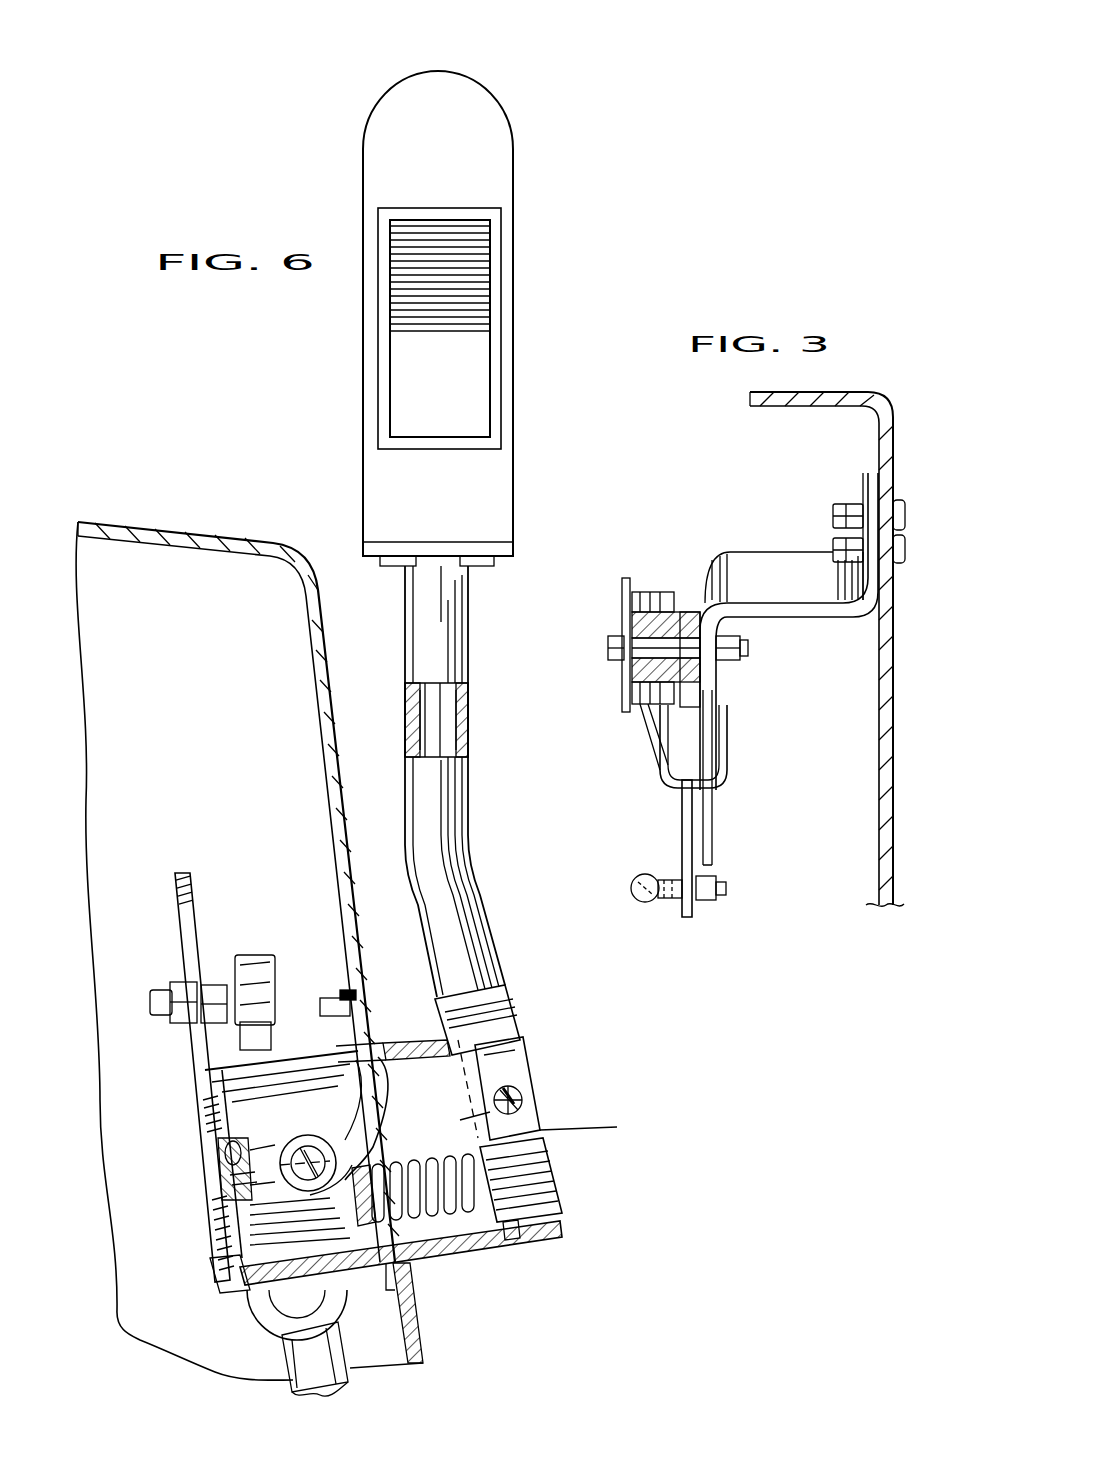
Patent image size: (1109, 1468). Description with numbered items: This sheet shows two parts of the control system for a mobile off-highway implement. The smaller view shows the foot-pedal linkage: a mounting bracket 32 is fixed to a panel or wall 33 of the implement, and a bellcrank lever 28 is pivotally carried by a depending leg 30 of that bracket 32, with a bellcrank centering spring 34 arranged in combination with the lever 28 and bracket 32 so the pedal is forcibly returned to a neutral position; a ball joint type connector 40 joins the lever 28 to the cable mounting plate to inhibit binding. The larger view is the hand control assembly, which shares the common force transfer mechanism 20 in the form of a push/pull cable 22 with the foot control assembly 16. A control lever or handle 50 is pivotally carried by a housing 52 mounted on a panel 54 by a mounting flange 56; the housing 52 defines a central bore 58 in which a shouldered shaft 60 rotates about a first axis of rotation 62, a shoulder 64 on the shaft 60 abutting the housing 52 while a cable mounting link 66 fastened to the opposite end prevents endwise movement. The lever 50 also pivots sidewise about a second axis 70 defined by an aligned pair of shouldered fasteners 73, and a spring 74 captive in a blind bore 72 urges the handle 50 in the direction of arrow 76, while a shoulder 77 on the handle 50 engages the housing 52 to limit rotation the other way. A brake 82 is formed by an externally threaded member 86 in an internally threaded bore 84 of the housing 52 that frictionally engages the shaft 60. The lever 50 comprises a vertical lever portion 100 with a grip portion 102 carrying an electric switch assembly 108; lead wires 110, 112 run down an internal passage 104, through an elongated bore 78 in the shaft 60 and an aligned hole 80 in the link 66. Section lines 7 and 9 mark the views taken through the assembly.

In FIG. 6, the section line 7- 7 is at (335, 839).
In FIG. 6, the section line 9- 9 is at (305, 1171).
In FIG. 6, the foot control assembly 16 is at (533, 341).
In FIG. 6, the force transfer mechanism 20 is at (352, 1338).
In FIG. 6, the push/pull cable 22 is at (240, 965).
In FIG. 3, the bellcrank lever 28 is at (690, 918).
In FIG. 3, the depending leg 30 is at (705, 690).
In FIG. 3, the mounting bracket 32 is at (784, 578).
In FIG. 3, the panel or wall 33 is at (808, 406).
In FIG. 3, the bellcrank centering spring 34 is at (663, 588).
In FIG. 3, the ball joint type connector 40 is at (642, 901).
In FIG. 6, the control lever or handle 50 is at (352, 394).
In FIG. 6, the housing 52 is at (479, 1264).
In FIG. 6, the panel 54 is at (198, 549).
In FIG. 6, the mounting flange 56 is at (342, 1006).
In FIG. 6, the central bore 58 is at (413, 1045).
In FIG. 6, the shouldered shaft 60 is at (510, 1067).
In FIG. 6, the first axis of rotation 62 is at (540, 1130).
In FIG. 6, the shoulder 64 is at (508, 1016).
In FIG. 6, the cable mounting link 66 is at (186, 905).
In FIG. 6, the second axis 70 is at (520, 1112).
In FIG. 6, the blind bore 72 is at (434, 1228).
In FIG. 6, the shouldered fastener 73 is at (508, 1086).
In FIG. 6, the spring 74 is at (548, 1178).
In FIG. 6, the arrow 76 is at (386, 36).
In FIG. 6, the shoulder 77 is at (505, 1226).
In FIG. 6, the elongated bore 78 is at (216, 1148).
In FIG. 6, the aligned hole 80 is at (226, 1190).
In FIG. 6, the brake 82 is at (285, 1152).
In FIG. 6, the internally threaded bore 84 is at (328, 1152).
In FIG. 6, the externally threaded member 86 is at (305, 1150).
In FIG. 6, the vertical lever portion 100 is at (450, 606).
In FIG. 6, the grip portion 102 is at (490, 178).
In FIG. 6, the internal passage 104 is at (456, 712).
In FIG. 6, the electric switch assembly 108 is at (468, 388).
In FIG. 6, the lead wire 110 is at (456, 745).
In FIG. 6, the lead wire 112 is at (408, 718).